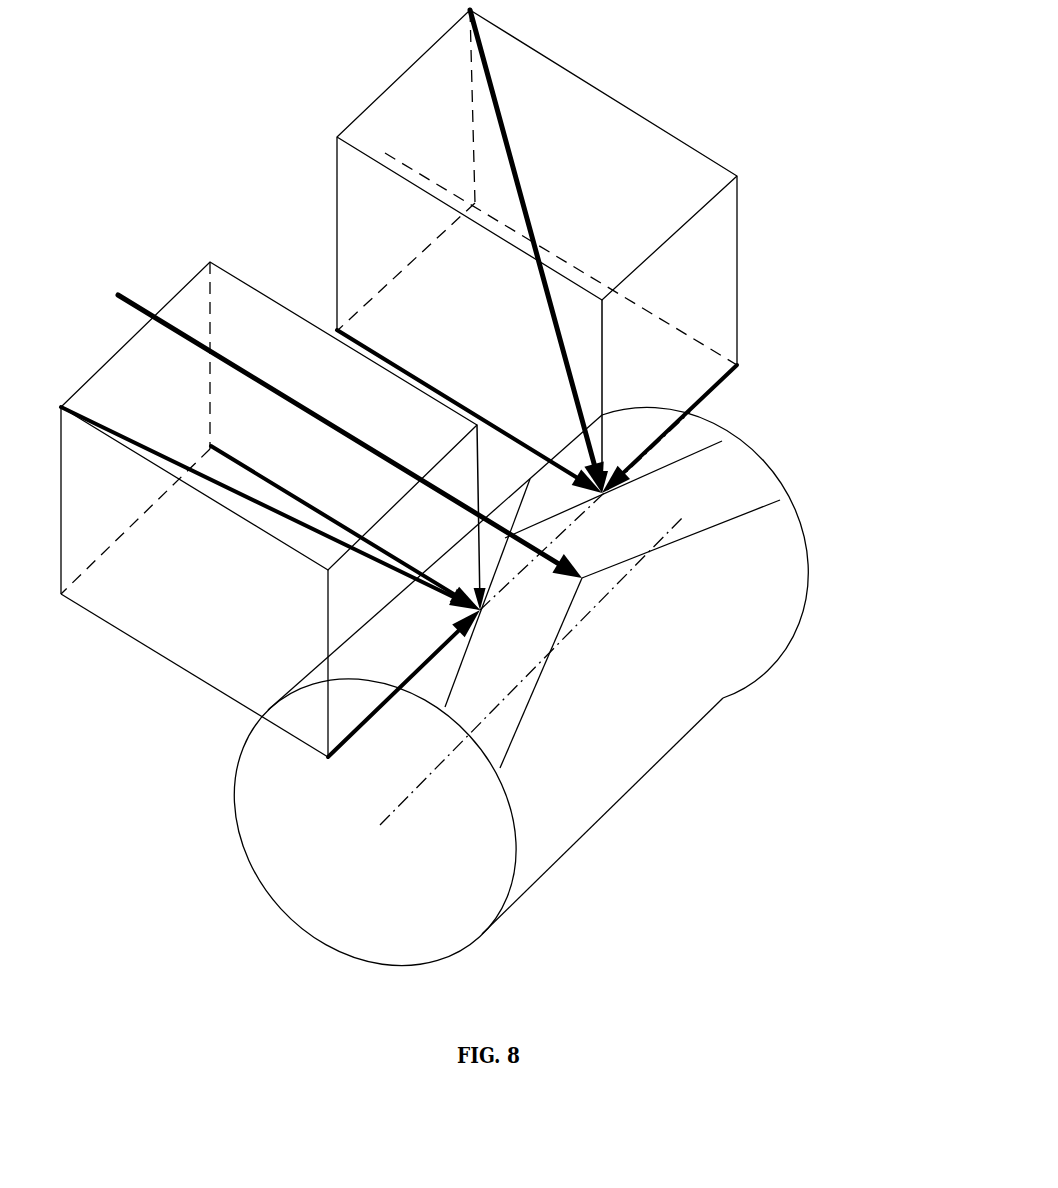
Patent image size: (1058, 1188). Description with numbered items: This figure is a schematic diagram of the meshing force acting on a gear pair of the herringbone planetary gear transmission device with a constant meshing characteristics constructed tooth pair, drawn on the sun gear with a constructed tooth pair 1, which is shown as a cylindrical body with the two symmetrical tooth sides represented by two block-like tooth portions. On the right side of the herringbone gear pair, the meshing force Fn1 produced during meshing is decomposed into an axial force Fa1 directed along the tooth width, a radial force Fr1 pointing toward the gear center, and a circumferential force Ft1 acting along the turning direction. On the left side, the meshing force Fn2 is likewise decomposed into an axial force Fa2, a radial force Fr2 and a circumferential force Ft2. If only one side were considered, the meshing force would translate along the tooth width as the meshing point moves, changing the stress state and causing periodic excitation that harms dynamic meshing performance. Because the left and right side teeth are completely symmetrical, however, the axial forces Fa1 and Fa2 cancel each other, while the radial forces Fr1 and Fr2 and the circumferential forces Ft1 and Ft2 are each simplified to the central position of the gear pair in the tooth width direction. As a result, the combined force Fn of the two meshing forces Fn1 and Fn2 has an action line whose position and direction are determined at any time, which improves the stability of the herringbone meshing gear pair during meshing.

The sun gear with a constructed tooth pair 1 is at (713, 598).
The combined force Fn is at (350, 436).
The meshing force Fn1 is at (537, 251).
The meshing force Fn2 is at (270, 503).
The circumferential force Ft1 is at (469, 410).
The circumferential force Ft2 is at (345, 528).
The radial force Fr1 is at (623, 396).
The radial force Fr2 is at (498, 517).
The axial force Fa1 is at (688, 429).
The axial force Fa2 is at (404, 696).